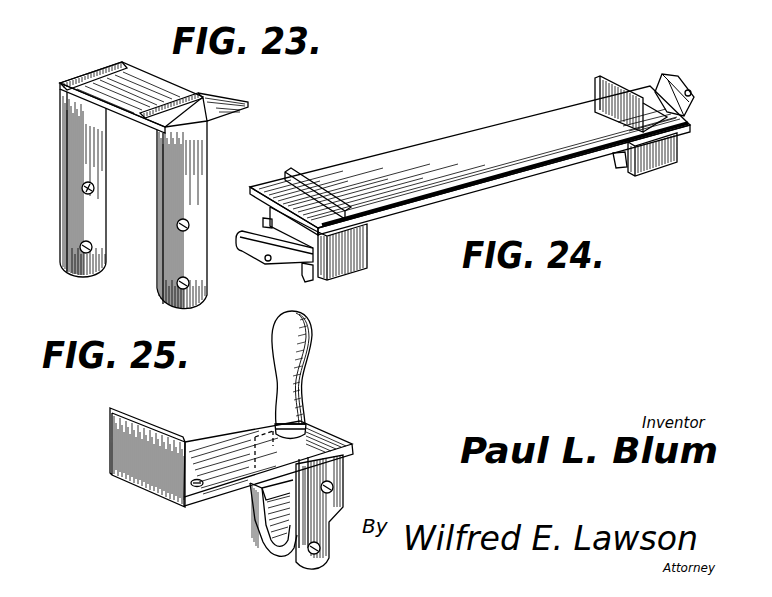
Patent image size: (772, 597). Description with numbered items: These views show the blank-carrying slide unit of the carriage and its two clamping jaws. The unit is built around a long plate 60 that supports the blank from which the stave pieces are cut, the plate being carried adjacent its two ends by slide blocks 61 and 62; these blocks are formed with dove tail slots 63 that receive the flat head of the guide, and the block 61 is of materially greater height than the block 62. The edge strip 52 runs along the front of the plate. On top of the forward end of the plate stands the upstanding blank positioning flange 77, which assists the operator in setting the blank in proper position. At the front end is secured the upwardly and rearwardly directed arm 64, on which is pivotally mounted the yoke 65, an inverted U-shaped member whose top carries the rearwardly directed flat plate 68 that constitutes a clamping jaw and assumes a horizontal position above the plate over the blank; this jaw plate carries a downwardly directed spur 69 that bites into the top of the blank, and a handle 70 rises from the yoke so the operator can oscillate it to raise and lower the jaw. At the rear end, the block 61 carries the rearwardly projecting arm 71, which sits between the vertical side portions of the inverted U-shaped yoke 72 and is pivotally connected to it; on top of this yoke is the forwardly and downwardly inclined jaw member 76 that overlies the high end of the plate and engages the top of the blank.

In FIG. 24, the plate edge strip 52 is at (547, 175).
In FIG. 24, the long plate 60 is at (466, 132).
In FIG. 24, the slide block 61 is at (367, 253).
In FIG. 24, the slide block 62 is at (638, 182).
In FIG. 24, the dove tail slots 63 is at (305, 272).
In FIG. 24, the arm 64 is at (685, 78).
In FIG. 25, the yoke 65 is at (340, 494).
In FIG. 25, the flat plate 68 is at (229, 440).
In FIG. 25, the spur 69 is at (197, 478).
In FIG. 25, the handle 70 is at (313, 346).
In FIG. 24, the arm 71 is at (285, 263).
In FIG. 23, the yoke 72 is at (205, 168).
In FIG. 23, the jaw member 76 is at (187, 98).
In FIG. 24, the blank positioning flange 77 is at (594, 88).